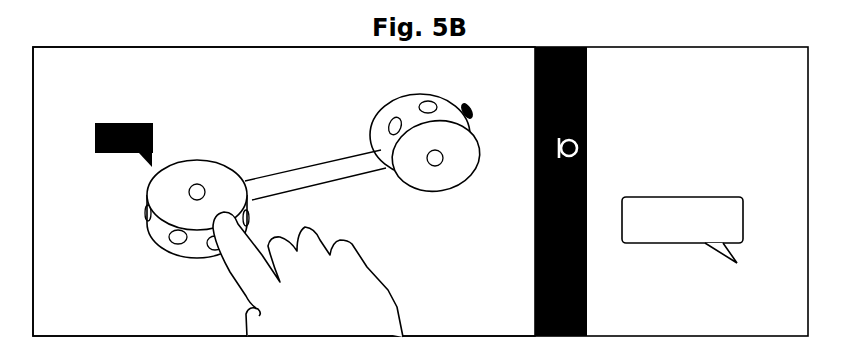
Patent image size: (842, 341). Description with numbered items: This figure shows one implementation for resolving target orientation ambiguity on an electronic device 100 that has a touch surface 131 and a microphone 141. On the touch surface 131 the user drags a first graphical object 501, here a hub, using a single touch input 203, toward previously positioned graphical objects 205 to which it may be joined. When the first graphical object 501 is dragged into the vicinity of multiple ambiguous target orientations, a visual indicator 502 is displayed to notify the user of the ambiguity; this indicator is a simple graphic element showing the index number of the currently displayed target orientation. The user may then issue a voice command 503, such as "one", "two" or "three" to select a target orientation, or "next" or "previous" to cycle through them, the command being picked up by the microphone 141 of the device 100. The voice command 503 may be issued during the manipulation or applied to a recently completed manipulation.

The device 100 is at (420, 191).
The touch surface 131 is at (251, 80).
The microphone 141 is at (675, 144).
The single touch gesture 203 is at (336, 274).
The graphical objects 205 is at (365, 160).
The first graphical object 501 is at (218, 194).
The visual indicator 502 is at (160, 132).
The voice command 503 is at (690, 266).